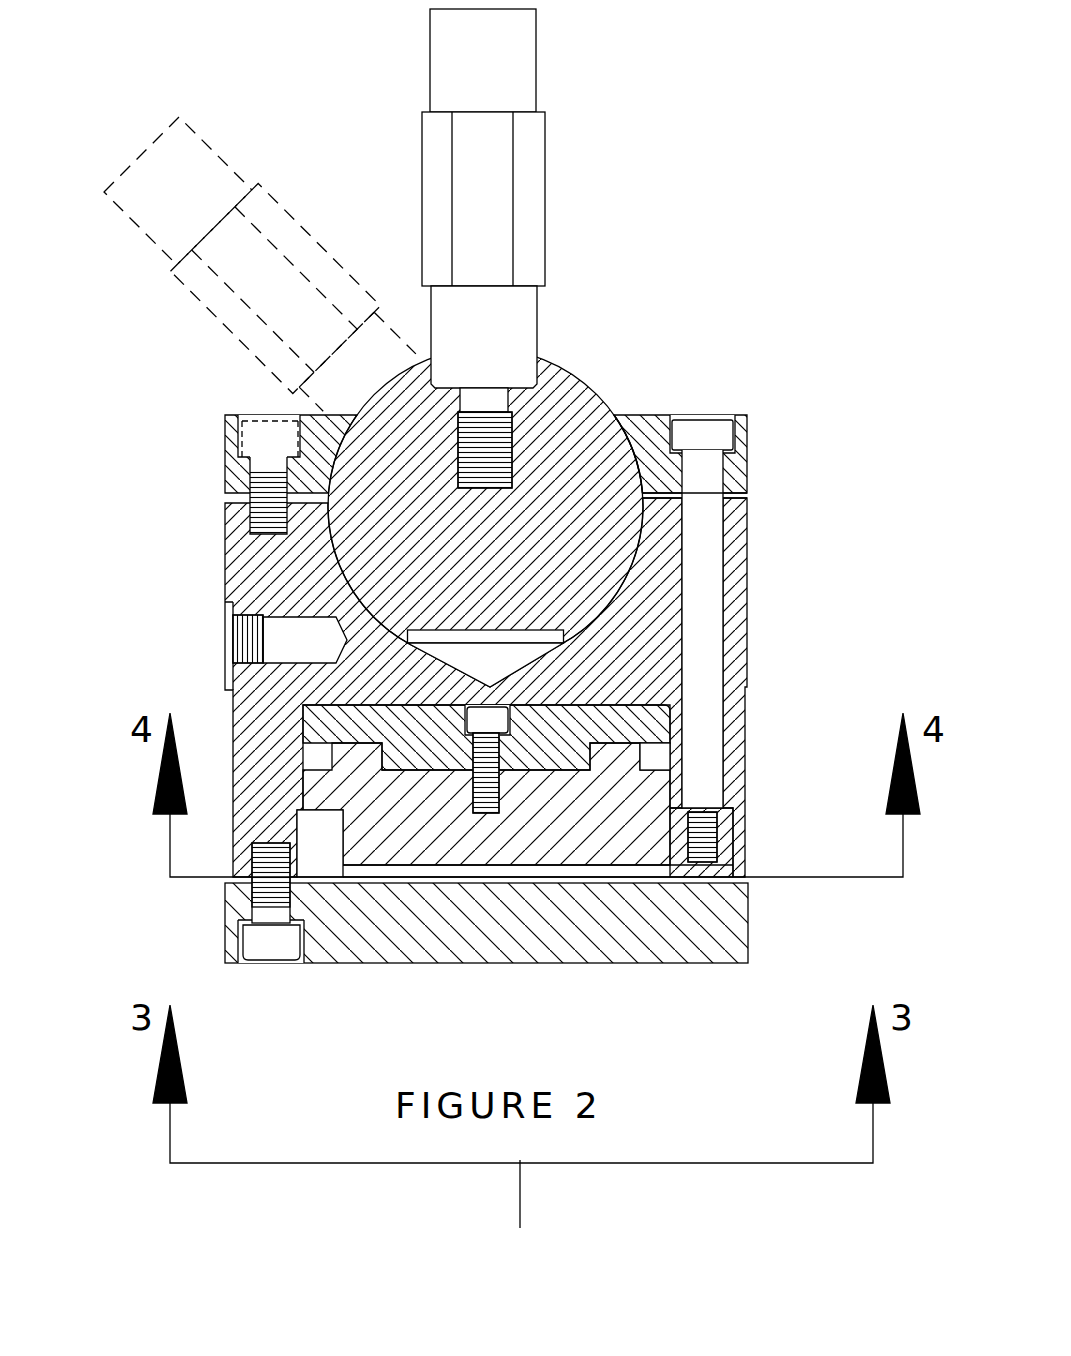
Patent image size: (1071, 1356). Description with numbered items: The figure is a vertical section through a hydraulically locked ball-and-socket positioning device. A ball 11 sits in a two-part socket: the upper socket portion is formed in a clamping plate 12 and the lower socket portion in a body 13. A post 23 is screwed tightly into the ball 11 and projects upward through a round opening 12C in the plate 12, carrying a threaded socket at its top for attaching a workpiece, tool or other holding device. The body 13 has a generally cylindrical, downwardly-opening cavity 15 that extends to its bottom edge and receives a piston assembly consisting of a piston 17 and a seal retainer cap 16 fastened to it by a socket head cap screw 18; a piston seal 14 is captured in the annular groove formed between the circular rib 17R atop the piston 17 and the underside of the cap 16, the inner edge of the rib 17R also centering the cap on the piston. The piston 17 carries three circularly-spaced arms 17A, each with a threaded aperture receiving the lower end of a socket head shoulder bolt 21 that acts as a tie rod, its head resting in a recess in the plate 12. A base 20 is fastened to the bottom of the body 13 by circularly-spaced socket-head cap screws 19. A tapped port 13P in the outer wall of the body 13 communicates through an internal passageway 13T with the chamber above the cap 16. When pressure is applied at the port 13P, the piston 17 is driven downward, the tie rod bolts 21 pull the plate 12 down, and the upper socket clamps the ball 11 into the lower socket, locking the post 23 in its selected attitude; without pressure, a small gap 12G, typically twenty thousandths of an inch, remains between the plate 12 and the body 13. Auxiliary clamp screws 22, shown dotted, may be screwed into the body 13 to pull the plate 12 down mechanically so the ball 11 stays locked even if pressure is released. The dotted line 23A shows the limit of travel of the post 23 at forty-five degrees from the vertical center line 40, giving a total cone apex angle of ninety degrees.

The ball 11 is at (568, 355).
The clamping plate 12 is at (650, 413).
The opening 12C is at (630, 410).
The gap 12G is at (752, 492).
The body 13 is at (747, 550).
The internal passageway 13T is at (300, 637).
The tapped port 13P is at (234, 643).
The piston seal 14 is at (660, 758).
The cavity 15 is at (317, 845).
The seal retainer cap 16 is at (665, 722).
The piston 17 is at (542, 866).
The arms 17A is at (737, 866).
The circular rib 17R is at (615, 760).
The socket head cap screw 18 is at (480, 812).
The socket-head cap screws 19 is at (262, 944).
The base 20 is at (752, 920).
The socket head shoulder bolt 21 is at (715, 420).
The auxiliary clamp screws 22 is at (246, 444).
The post 23 is at (525, 203).
The dotted line 23A is at (232, 330).
The vertical center line 40 is at (530, 1196).